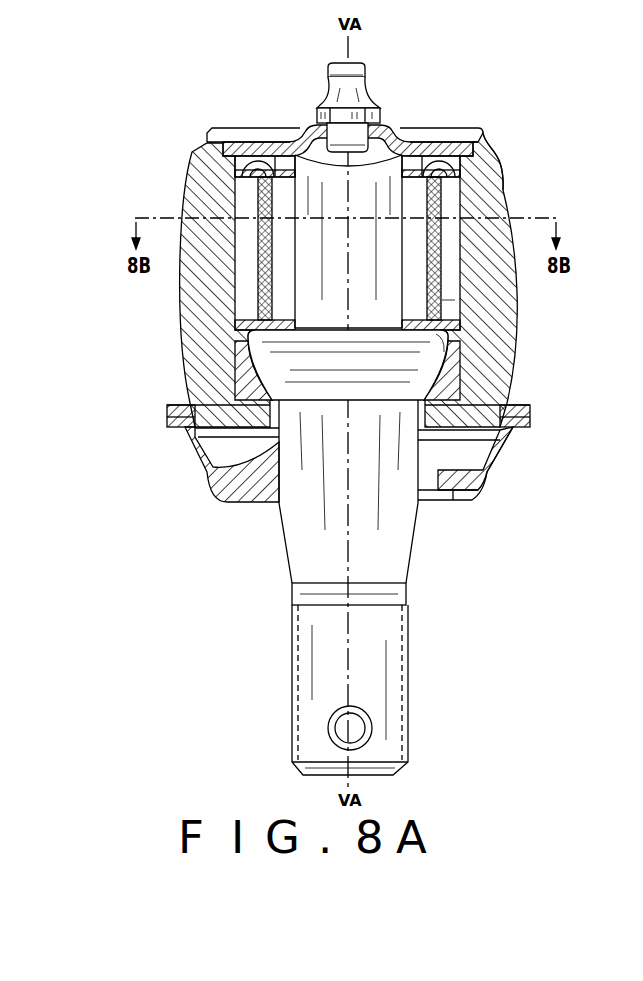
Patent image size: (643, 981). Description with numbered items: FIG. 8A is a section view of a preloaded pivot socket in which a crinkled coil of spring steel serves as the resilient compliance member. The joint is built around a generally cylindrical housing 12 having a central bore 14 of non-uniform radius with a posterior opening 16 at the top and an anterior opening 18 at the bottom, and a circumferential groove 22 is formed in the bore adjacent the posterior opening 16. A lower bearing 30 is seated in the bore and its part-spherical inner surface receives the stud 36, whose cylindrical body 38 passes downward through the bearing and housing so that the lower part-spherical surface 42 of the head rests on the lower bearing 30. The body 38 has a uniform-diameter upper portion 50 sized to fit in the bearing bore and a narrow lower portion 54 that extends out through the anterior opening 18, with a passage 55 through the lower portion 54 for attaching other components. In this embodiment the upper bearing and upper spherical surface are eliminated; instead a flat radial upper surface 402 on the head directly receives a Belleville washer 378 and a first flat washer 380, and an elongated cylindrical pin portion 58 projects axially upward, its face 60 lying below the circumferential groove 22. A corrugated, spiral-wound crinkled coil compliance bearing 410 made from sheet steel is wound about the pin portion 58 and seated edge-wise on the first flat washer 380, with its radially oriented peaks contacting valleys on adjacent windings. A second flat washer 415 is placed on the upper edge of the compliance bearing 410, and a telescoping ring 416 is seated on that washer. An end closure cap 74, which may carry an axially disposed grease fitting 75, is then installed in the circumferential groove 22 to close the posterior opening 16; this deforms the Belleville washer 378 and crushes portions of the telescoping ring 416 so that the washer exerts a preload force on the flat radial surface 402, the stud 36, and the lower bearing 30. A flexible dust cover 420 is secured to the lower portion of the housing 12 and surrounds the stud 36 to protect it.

The housing 12 is at (190, 190).
The central bore 14 is at (243, 338).
The posterior opening 16 is at (437, 131).
The anterior opening 18 is at (212, 467).
The circumferential groove 22 is at (214, 144).
The lower bearing 30 is at (197, 419).
The stud 36 is at (442, 560).
The cylindrical body 38 is at (402, 567).
The lower part-spherical surface 42 is at (425, 379).
The upper portion 50 is at (436, 471).
The lower portion 54 is at (412, 656).
The passage 55 is at (357, 729).
The pin portion 58 is at (383, 177).
The face 60 is at (302, 128).
The end closure cap 74 is at (480, 130).
The grease fitting 75 is at (378, 72).
The Belleville washer 378 is at (448, 312).
The first flat washer 380 is at (418, 357).
The flat radial upper surface 402 is at (312, 338).
The crinkled coil compliance bearing 410 is at (432, 184).
The second flat washer 415 is at (438, 205).
The telescoping ring 416 is at (262, 172).
The dust cover 420 is at (507, 462).